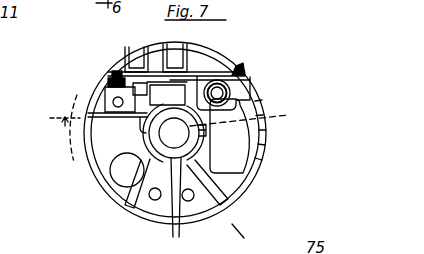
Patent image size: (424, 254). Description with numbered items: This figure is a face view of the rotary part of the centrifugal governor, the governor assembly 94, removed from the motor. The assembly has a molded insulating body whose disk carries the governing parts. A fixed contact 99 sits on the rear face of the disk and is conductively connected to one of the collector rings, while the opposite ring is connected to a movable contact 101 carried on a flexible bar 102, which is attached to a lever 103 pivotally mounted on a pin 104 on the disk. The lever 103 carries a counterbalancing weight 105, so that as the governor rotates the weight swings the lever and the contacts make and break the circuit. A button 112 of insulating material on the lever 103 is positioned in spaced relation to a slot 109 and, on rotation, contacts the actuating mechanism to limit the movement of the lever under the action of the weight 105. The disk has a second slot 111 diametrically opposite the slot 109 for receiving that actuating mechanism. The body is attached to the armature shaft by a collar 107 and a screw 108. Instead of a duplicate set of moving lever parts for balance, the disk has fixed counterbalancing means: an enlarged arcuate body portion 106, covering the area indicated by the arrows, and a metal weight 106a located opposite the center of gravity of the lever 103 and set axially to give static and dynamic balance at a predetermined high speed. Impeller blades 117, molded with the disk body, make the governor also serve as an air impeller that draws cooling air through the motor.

The governor assembly 94 is at (86, 176).
The contact 99 is at (108, 88).
The movable contact 101 is at (110, 72).
The flexible bar 102 is at (181, 68).
The lever 103 is at (230, 80).
The pin 104 is at (222, 82).
The counterbalancing weight 105 is at (262, 150).
The enlarged arcuate body portion 106 is at (95, 155).
The metal weight 106a is at (121, 179).
The collar 107 is at (233, 220).
The screw 108 is at (254, 116).
The slot 109 is at (137, 110).
The slot 111 is at (168, 170).
The button 112 is at (153, 78).
The impeller blades 117 is at (133, 62).